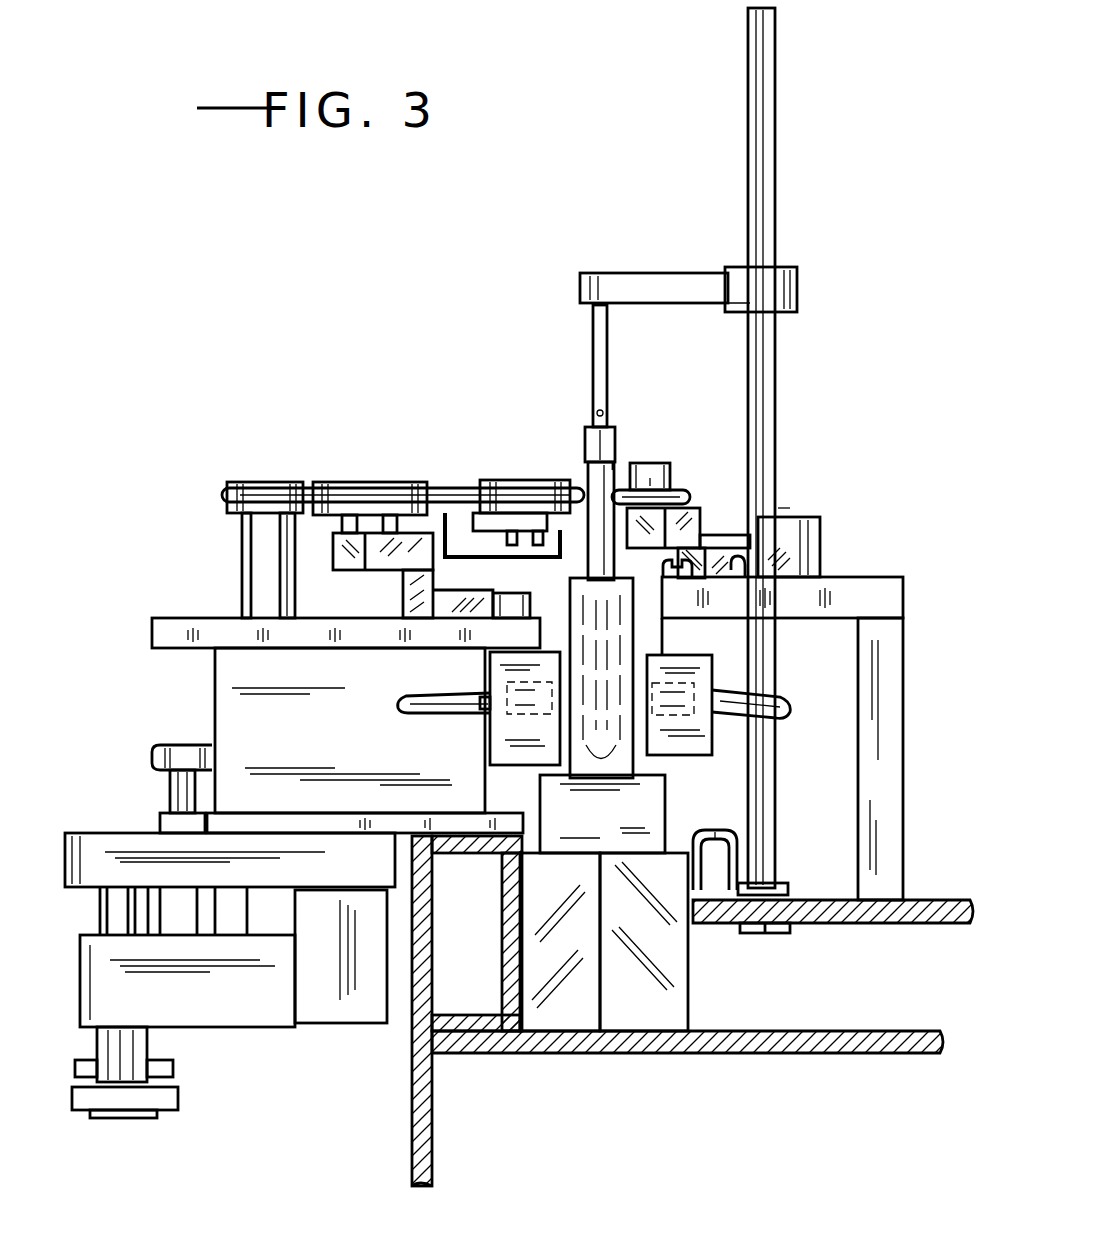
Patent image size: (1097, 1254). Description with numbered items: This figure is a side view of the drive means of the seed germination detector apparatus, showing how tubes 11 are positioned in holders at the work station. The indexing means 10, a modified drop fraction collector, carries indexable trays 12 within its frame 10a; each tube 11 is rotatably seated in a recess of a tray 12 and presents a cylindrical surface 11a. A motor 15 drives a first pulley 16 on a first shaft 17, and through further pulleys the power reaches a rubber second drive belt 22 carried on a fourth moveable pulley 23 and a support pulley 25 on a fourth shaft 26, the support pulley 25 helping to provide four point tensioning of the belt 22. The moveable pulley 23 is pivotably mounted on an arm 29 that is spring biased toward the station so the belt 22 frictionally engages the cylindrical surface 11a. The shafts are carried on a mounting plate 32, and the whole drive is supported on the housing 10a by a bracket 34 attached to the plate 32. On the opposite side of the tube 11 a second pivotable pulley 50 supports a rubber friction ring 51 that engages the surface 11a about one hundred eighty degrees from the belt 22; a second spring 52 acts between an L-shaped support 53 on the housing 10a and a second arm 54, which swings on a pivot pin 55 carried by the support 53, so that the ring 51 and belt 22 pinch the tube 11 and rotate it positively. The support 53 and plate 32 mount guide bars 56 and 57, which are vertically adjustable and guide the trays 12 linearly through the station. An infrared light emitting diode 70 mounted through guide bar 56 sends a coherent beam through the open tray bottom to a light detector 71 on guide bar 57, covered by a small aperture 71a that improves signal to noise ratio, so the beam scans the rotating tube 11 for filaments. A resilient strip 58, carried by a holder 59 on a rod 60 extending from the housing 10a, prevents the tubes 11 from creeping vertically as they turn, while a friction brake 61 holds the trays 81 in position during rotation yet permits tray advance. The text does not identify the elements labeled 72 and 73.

The indexing means 10 is at (366, 1101).
The frame 10a is at (905, 913).
The tubes 11 is at (590, 473).
The cylindrical surface 11a is at (618, 468).
The indexable trays 12 is at (570, 633).
The motor 15 is at (210, 1002).
The first pulley 16 is at (172, 745).
The first shaft 17 is at (168, 790).
The second drive belt 22 is at (352, 495).
The fourth moveable pulley 23 is at (516, 512).
The support pulley 25 is at (262, 482).
The fourth shaft 26 is at (240, 548).
The arm 29 is at (495, 548).
The mounting plate 32 is at (158, 618).
The bracket 34 is at (85, 858).
The second pivotable pulley 50 is at (670, 482).
The friction ring 51 is at (680, 495).
The second spring 52 is at (838, 576).
The L-shaped support 53 is at (882, 632).
The second arm 54 is at (770, 547).
The pivot pin 55 is at (784, 510).
The guide bar 56 is at (495, 738).
The guide bar 57 is at (680, 758).
The resilient strip 58 is at (593, 348).
The holder 59 is at (658, 272).
The rod 60 is at (776, 368).
The friction brake 61 is at (740, 836).
The light emitting diode 70 is at (662, 680).
The light detector 71 is at (512, 760).
The aperture 71a is at (490, 680).
The arm 72 is at (404, 708).
The arm 73 is at (768, 702).
The trays 81 is at (613, 833).